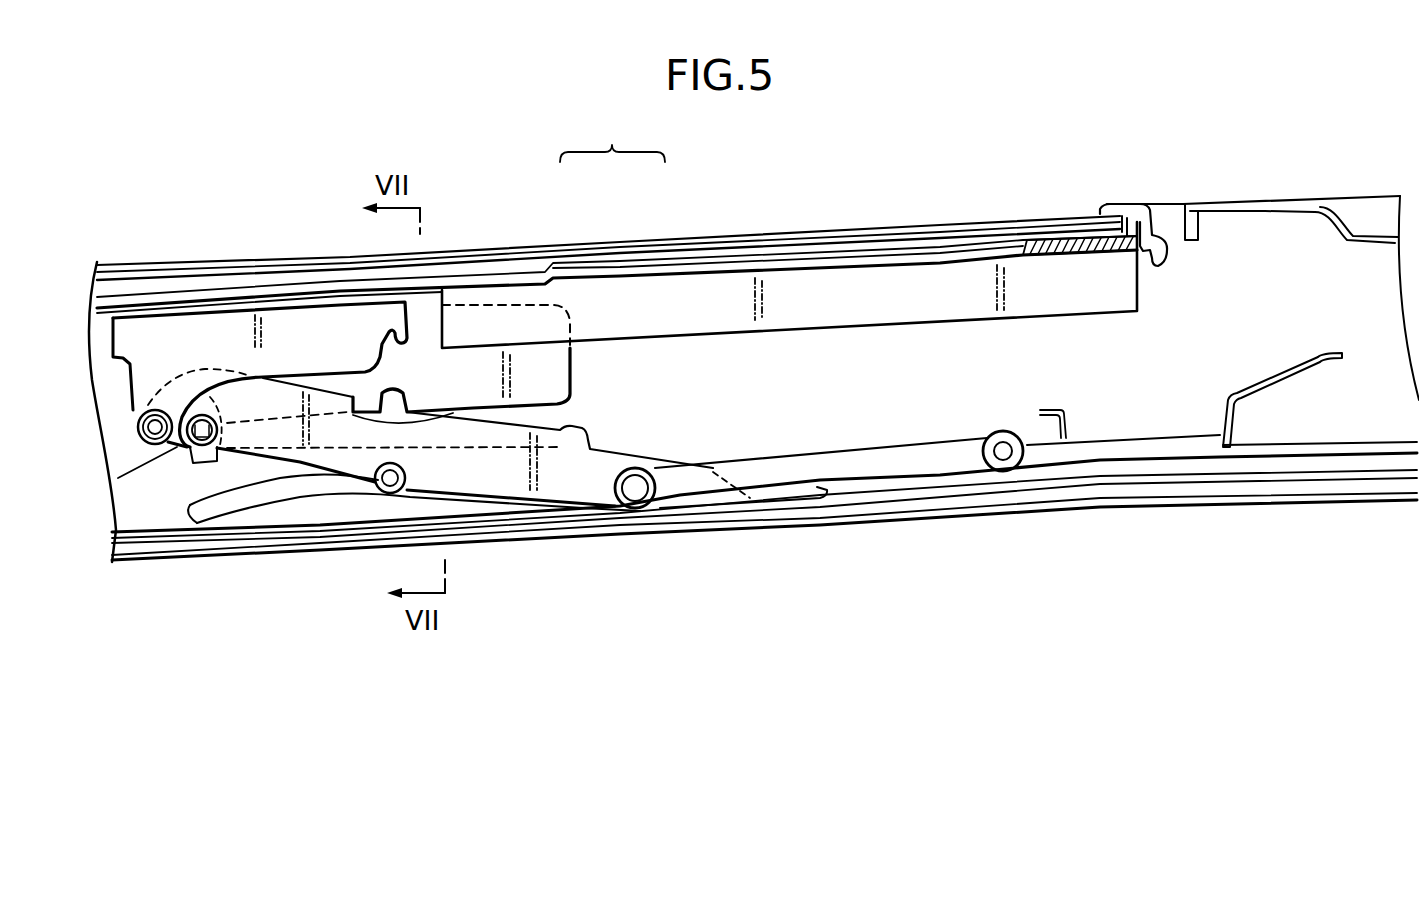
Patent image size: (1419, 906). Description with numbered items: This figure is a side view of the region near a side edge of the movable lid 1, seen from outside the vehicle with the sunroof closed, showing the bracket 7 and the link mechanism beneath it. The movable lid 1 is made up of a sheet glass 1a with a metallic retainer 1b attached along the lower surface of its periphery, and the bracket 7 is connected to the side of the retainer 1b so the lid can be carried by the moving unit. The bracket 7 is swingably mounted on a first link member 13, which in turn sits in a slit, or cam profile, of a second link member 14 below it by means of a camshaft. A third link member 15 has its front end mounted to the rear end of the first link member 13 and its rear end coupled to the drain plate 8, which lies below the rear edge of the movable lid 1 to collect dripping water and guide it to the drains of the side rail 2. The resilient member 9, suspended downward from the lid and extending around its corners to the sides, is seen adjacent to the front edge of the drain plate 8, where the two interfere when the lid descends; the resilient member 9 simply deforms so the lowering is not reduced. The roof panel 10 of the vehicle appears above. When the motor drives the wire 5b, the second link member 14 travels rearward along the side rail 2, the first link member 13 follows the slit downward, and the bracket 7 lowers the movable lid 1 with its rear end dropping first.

The movable lid 1 is at (617, 211).
The sheet glass 1a is at (527, 252).
The retainer 1b is at (625, 268).
The side rail 2 is at (1070, 478).
The wire 5b is at (1210, 472).
The bracket 7 is at (548, 366).
The drain plate 8 is at (1297, 380).
The resilient member 9 is at (1050, 297).
The roof panel 10 is at (1355, 197).
The first link member 13 is at (572, 478).
The second link member 14 is at (323, 510).
The third link member 15 is at (933, 462).